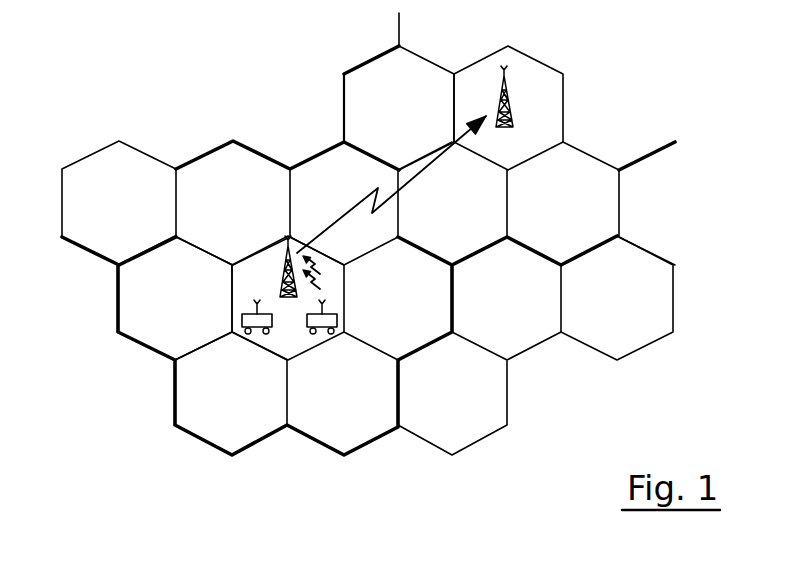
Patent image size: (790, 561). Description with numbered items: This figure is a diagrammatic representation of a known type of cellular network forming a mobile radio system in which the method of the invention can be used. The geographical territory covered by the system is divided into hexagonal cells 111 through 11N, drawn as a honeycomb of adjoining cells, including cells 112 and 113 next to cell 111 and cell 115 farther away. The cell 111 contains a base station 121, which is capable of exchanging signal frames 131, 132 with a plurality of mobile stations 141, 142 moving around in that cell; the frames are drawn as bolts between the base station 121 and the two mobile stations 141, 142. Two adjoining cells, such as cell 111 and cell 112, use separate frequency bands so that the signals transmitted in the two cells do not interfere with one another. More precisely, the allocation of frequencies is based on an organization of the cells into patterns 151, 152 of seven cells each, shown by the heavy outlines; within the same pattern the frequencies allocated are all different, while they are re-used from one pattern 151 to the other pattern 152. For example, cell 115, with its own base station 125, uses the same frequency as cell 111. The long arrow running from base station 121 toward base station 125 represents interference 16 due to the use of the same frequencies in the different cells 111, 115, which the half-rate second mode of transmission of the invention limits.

The cell 111 is at (283, 348).
The cell 112 is at (193, 423).
The cell 113 is at (147, 335).
The cell 115 is at (552, 106).
The cell 11N is at (600, 337).
The base station 121 is at (281, 270).
The base station 125 is at (513, 100).
The signal frame 131 is at (318, 287).
The signal frame 132 is at (322, 273).
The mobile station 141 is at (323, 328).
The mobile station 142 is at (242, 319).
The pattern 151 is at (197, 158).
The pattern 152 is at (380, 57).
The interference 16 is at (432, 166).